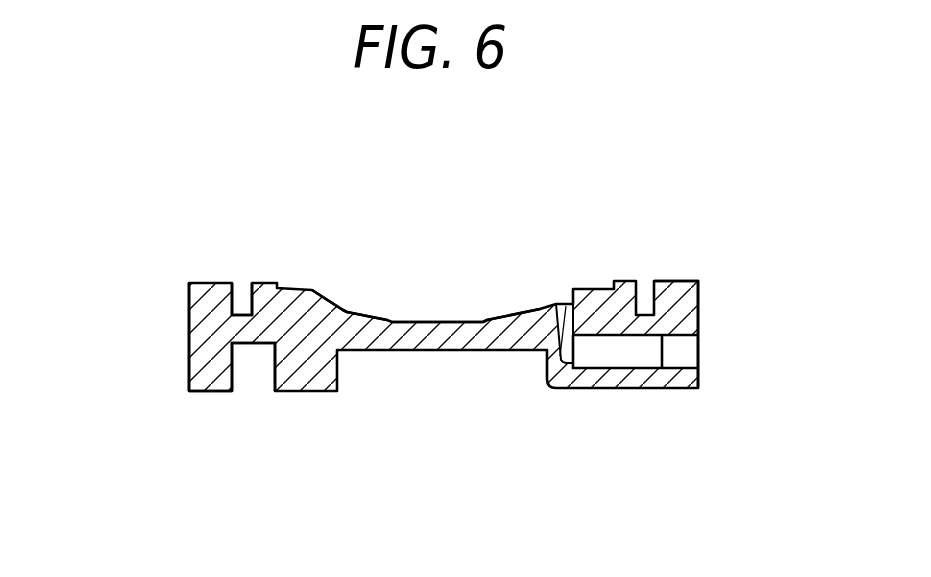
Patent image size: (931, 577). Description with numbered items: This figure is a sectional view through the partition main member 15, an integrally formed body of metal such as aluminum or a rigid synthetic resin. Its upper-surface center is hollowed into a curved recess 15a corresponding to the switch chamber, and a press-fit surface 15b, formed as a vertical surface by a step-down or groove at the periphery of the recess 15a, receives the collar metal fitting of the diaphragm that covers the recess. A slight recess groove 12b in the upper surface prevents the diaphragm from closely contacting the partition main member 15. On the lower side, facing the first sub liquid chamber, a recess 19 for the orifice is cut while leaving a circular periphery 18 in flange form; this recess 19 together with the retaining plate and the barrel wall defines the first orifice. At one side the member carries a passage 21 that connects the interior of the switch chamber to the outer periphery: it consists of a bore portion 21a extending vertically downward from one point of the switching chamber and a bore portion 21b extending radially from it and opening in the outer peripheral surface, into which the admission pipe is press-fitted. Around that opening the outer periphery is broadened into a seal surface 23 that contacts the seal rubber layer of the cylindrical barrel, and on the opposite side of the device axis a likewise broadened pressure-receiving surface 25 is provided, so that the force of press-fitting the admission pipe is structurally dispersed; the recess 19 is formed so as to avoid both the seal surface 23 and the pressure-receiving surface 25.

The partition main member 15 is at (708, 256).
The recess 15a is at (453, 319).
The press-fit surface 15b is at (250, 297).
The recess groove 12b is at (352, 306).
The circular periphery 18 is at (205, 393).
The recess for orifice 19 is at (253, 362).
The passage 21 is at (611, 426).
The bore portion 21a is at (565, 362).
The bore portion 21b is at (643, 352).
The seal surface 23 is at (698, 316).
The pressure-receiving surface 25 is at (189, 343).